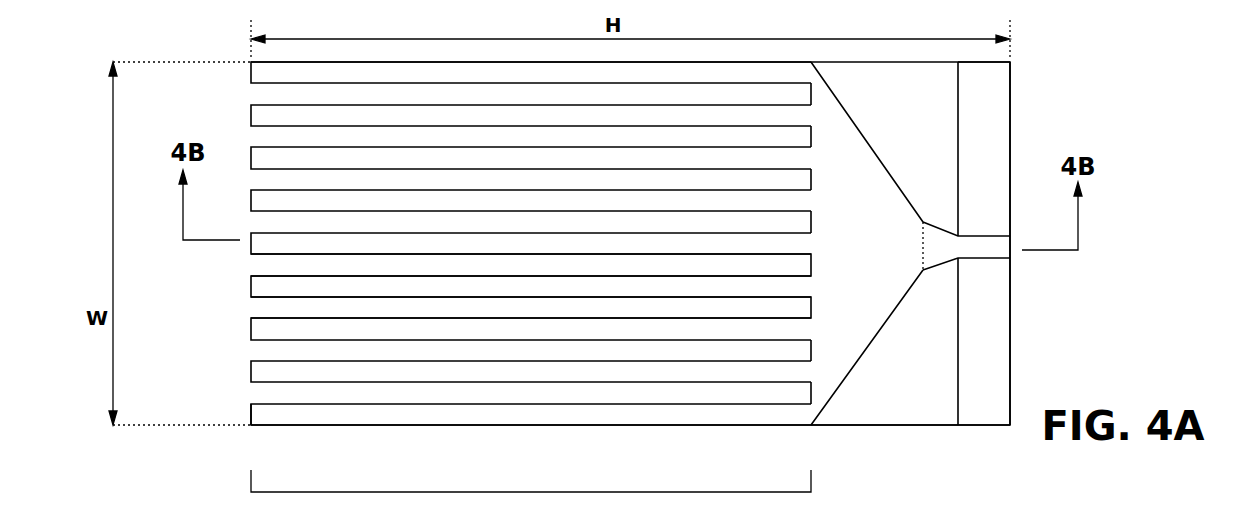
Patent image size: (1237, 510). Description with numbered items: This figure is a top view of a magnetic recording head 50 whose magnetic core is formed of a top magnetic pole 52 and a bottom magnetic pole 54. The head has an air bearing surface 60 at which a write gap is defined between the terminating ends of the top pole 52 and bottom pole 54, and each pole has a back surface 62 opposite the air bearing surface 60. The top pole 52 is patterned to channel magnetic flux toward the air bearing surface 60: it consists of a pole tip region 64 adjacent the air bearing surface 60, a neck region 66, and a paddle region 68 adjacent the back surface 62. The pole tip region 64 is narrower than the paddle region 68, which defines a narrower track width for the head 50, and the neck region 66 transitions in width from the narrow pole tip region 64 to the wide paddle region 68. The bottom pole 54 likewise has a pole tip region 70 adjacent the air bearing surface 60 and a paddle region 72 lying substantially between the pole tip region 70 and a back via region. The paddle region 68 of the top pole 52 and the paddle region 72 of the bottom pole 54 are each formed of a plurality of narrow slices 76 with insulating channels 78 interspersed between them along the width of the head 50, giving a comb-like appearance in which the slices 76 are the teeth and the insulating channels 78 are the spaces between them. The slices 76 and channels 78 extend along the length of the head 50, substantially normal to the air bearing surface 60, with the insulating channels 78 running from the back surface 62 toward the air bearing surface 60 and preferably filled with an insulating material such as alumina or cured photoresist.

The magnetic recording head 50 is at (1086, 88).
The top magnetic pole 52 is at (497, 261).
The bottom magnetic pole 54 is at (855, 413).
The air bearing surface 60 is at (1015, 338).
The back surface 62 is at (250, 410).
The pole tip region 64 is at (932, 257).
The neck region 66 is at (839, 254).
The paddle region 68 is at (531, 490).
The pole tip region 70 is at (972, 416).
The paddle region 72 is at (909, 416).
The narrow slices 76 is at (272, 370).
The insulating channels 78 is at (262, 311).